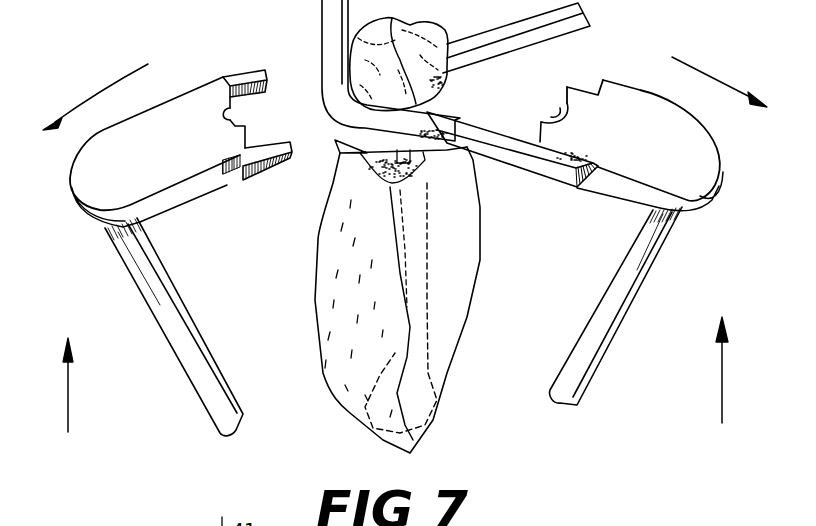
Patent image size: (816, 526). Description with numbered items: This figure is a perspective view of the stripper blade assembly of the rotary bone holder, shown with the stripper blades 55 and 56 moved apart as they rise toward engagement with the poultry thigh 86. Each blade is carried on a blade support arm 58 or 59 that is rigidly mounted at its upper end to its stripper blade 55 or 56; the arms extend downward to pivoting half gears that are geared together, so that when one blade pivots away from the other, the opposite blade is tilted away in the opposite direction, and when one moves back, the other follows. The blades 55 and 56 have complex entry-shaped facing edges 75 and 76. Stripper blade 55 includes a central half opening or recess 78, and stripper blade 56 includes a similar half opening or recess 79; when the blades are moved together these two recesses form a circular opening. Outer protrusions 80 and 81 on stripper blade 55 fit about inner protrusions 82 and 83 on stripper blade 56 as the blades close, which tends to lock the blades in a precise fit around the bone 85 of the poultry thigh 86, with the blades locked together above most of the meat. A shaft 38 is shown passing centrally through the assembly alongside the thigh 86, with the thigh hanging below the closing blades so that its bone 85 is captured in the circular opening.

The tubular shaft 38 is at (320, 92).
The stripper blade 55 is at (82, 151).
The stripper blade 56 is at (703, 131).
The blade support arm 58 is at (613, 313).
The blade support arm 59 is at (157, 304).
The facing edge 75 is at (236, 98).
The facing edge 76 is at (533, 137).
The half opening or recess 78 is at (222, 113).
The half opening or recess 79 is at (560, 110).
The outer protrusion 80 is at (252, 73).
The outer protrusion 81 is at (288, 141).
The inner protrusion 82 is at (540, 124).
The inner protrusion 83 is at (568, 88).
The bone 85 is at (427, 268).
The poultry thigh 86 is at (463, 310).